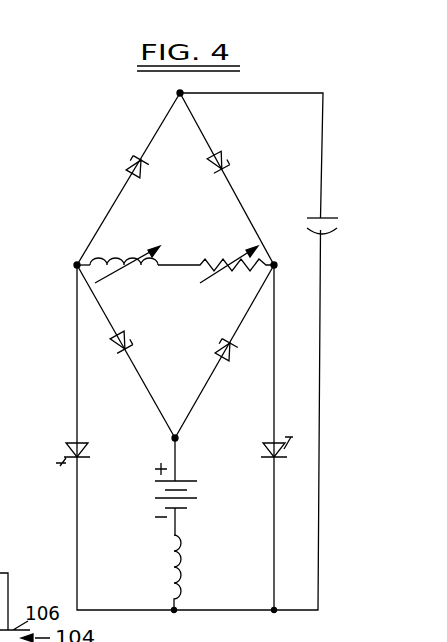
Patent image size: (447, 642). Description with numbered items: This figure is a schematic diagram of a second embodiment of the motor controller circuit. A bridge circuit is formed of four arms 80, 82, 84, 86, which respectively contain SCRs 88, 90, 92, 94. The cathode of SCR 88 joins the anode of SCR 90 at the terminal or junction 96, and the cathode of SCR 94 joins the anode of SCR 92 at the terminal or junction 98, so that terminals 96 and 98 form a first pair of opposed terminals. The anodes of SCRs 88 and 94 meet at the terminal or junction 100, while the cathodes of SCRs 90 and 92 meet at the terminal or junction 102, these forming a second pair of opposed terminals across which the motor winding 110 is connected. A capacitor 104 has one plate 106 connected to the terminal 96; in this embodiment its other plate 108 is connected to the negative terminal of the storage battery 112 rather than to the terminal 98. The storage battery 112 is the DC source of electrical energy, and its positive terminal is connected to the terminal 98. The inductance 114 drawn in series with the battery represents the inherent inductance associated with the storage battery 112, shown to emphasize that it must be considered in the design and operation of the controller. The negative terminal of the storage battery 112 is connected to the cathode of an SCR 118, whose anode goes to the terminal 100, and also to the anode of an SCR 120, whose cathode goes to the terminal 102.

The bridge arm 80 is at (97, 231).
The bridge arm 82 is at (254, 220).
The bridge arm 84 is at (244, 318).
The bridge arm 86 is at (103, 309).
The SCR 88 is at (133, 163).
The SCR 90 is at (226, 160).
The SCR 92 is at (231, 360).
The SCR 94 is at (132, 339).
The terminal or junction 96 is at (180, 93).
The terminal or junction 98 is at (180, 438).
The terminal or junction 100 is at (75, 266).
The terminal or junction 102 is at (278, 267).
The capacitor 104 is at (366, 229).
The capacitor plate 106 is at (328, 216).
The capacitor plate 108 is at (326, 236).
The motor winding 110 is at (213, 245).
The storage battery 112 is at (200, 493).
The inductance 114 is at (183, 568).
The SCR 118 is at (82, 446).
The SCR 120 is at (268, 457).